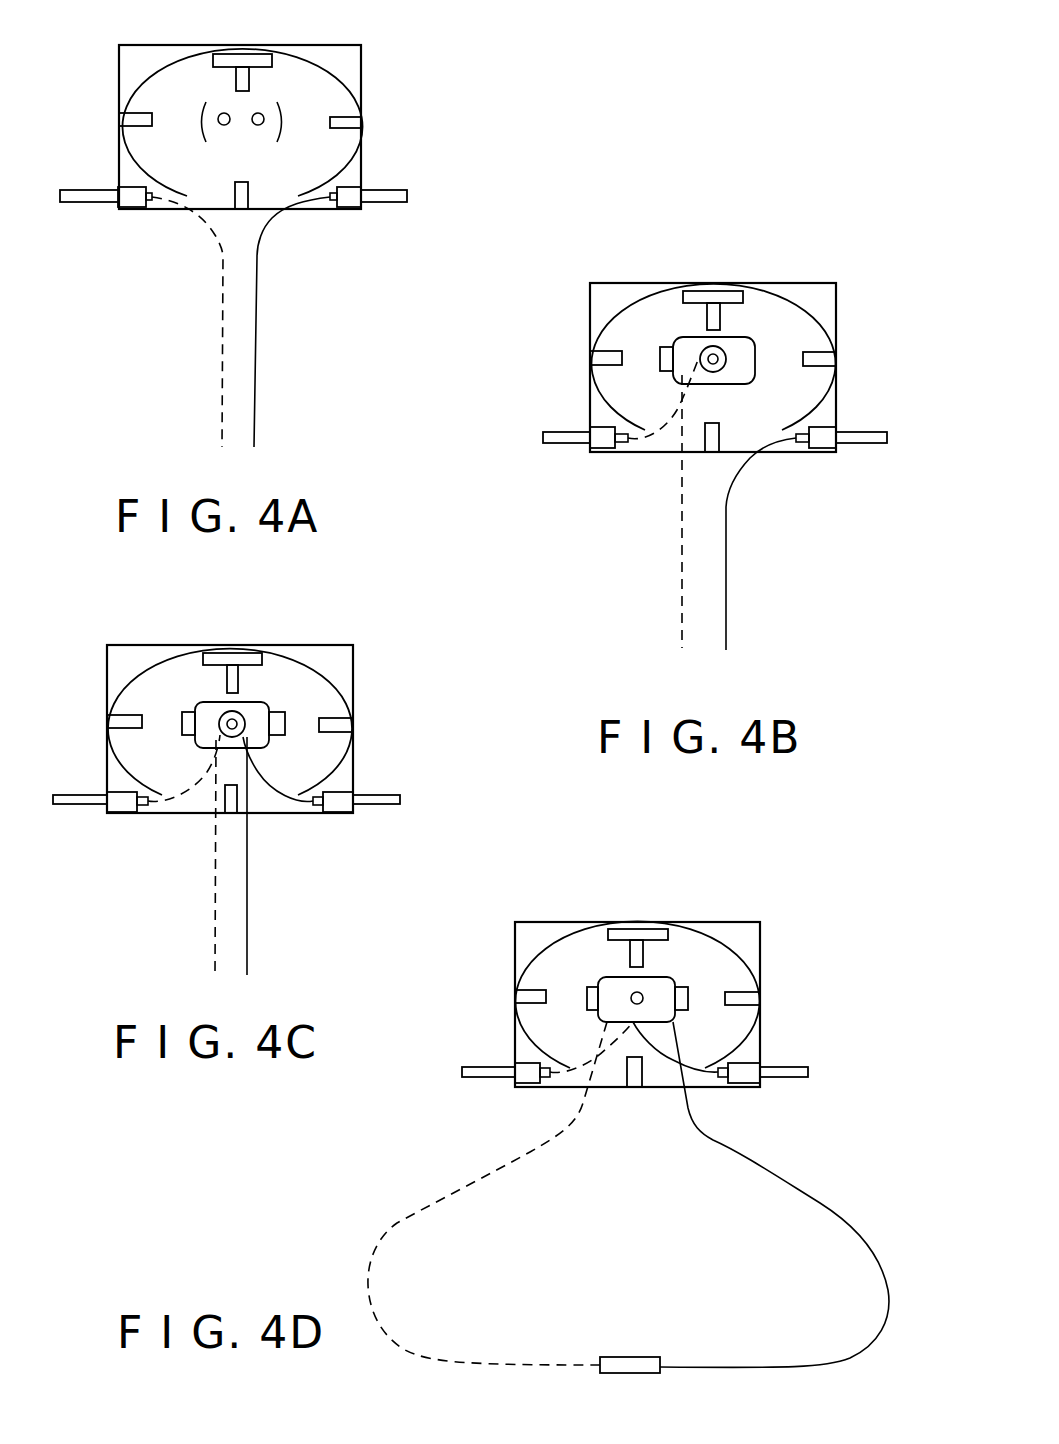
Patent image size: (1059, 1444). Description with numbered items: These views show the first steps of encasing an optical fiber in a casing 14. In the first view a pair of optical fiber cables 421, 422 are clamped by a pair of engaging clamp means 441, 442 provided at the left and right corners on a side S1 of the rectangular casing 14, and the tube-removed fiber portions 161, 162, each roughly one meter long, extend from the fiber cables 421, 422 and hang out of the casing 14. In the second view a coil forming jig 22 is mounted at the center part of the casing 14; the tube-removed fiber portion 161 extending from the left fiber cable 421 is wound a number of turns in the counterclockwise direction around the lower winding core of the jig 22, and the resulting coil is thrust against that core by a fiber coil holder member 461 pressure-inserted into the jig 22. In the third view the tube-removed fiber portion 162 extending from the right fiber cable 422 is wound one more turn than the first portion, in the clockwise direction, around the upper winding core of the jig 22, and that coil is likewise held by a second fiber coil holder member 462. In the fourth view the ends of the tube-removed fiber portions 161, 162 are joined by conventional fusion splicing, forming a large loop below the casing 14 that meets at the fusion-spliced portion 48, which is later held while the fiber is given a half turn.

In FIG. 4A, the casing 14 is at (337, 55).
In FIG. 4B, the casing 14 is at (797, 290).
In FIG. 4C, the casing 14 is at (325, 662).
In FIG. 4D, the casing 14 is at (725, 930).
In FIG. 4B, the coil forming jig 22 is at (682, 338).
In FIG. 4A, the optical fiber cable 421 is at (78, 190).
In FIG. 4A, the optical fiber cable 422 is at (392, 196).
In FIG. 4A, the engaging clamp means 441 is at (130, 210).
In FIG. 4A, the engaging clamp means 442 is at (347, 212).
In FIG. 4A, the tube-removed fiber portion 161 is at (222, 326).
In FIG. 4B, the tube-removed fiber portion 161 is at (680, 545).
In FIG. 4C, the tube-removed fiber portion 161 is at (213, 912).
In FIG. 4D, the tube-removed fiber portion 161 is at (512, 1165).
In FIG. 4A, the tube-removed fiber portion 162 is at (257, 360).
In FIG. 4B, the tube-removed fiber portion 162 is at (761, 544).
In FIG. 4C, the tube-removed fiber portion 162 is at (248, 910).
In FIG. 4D, the tube-removed fiber portion 162 is at (773, 1177).
In FIG. 4B, the fiber coil holder member 461 is at (661, 362).
In FIG. 4C, the fiber coil holder member 461 is at (182, 728).
In FIG. 4D, the fiber coil holder member 461 is at (587, 1000).
In FIG. 4C, the fiber coil holder member 462 is at (286, 722).
In FIG. 4D, the fiber coil holder member 462 is at (690, 990).
In FIG. 4D, the fusion-spliced portion 48 is at (632, 1357).
In FIG. 4A, the side S1 is at (315, 251).